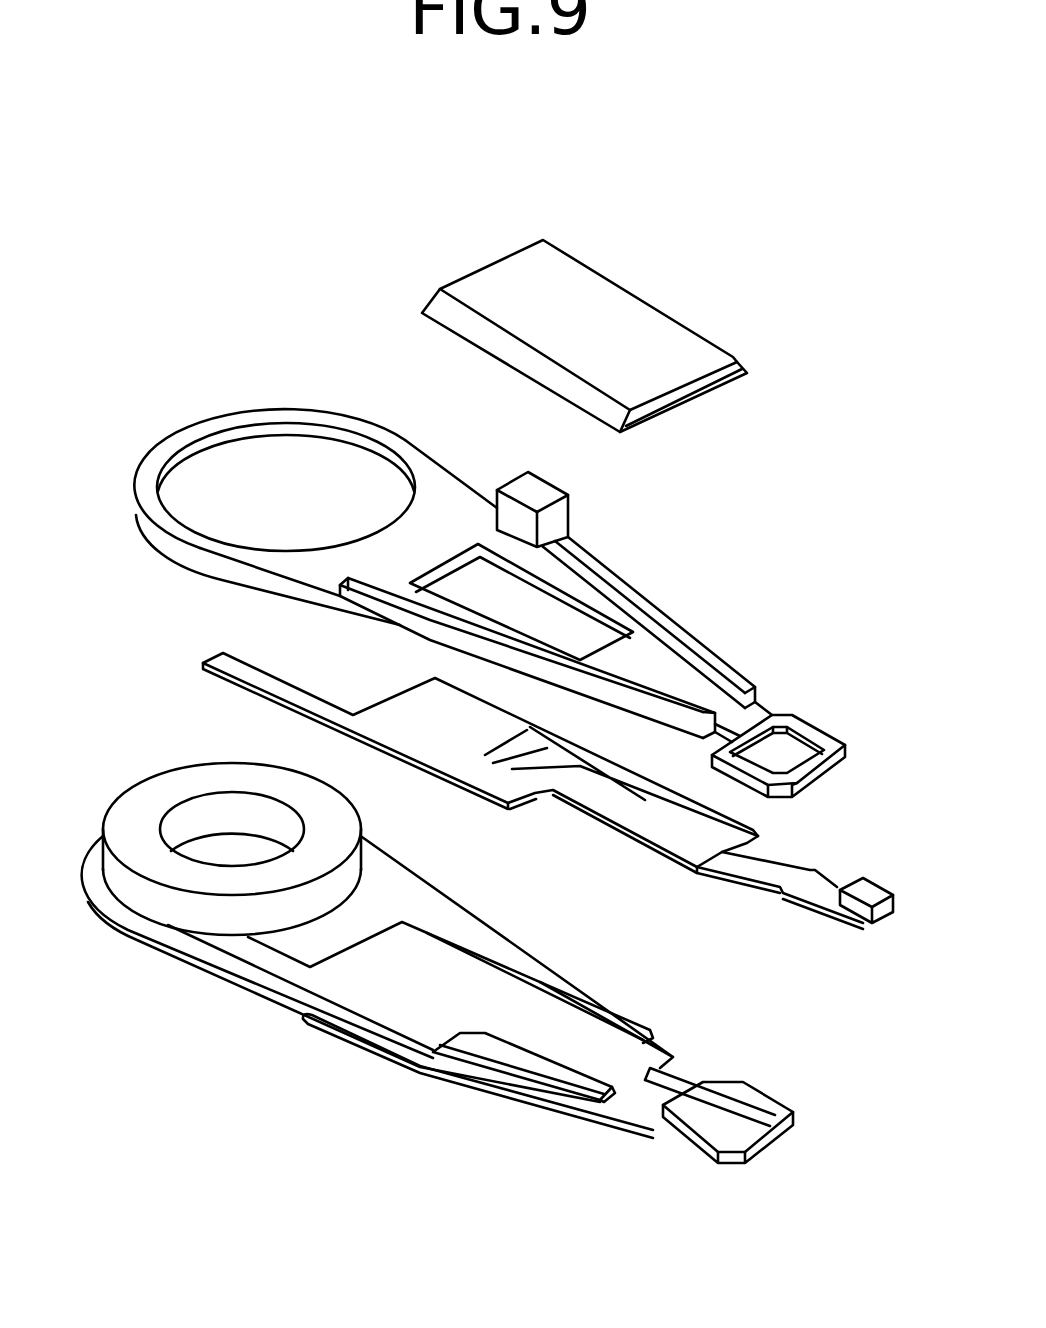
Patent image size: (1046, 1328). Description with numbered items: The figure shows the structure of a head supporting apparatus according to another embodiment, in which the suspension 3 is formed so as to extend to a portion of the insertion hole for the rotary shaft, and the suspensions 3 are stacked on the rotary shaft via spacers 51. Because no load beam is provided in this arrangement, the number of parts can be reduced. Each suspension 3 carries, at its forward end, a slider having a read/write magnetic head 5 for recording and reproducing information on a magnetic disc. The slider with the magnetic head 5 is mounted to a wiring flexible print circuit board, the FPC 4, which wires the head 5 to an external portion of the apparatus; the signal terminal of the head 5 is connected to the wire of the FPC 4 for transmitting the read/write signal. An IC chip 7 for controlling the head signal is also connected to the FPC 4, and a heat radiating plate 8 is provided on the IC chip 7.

The suspension 3 is at (662, 667).
The wiring flexible print circuit board (FPC) 4 is at (772, 858).
The magnetic head 5 is at (882, 890).
The IC chip 7 is at (548, 493).
The heat radiating plate 8 is at (642, 330).
The spacer 51 is at (145, 807).